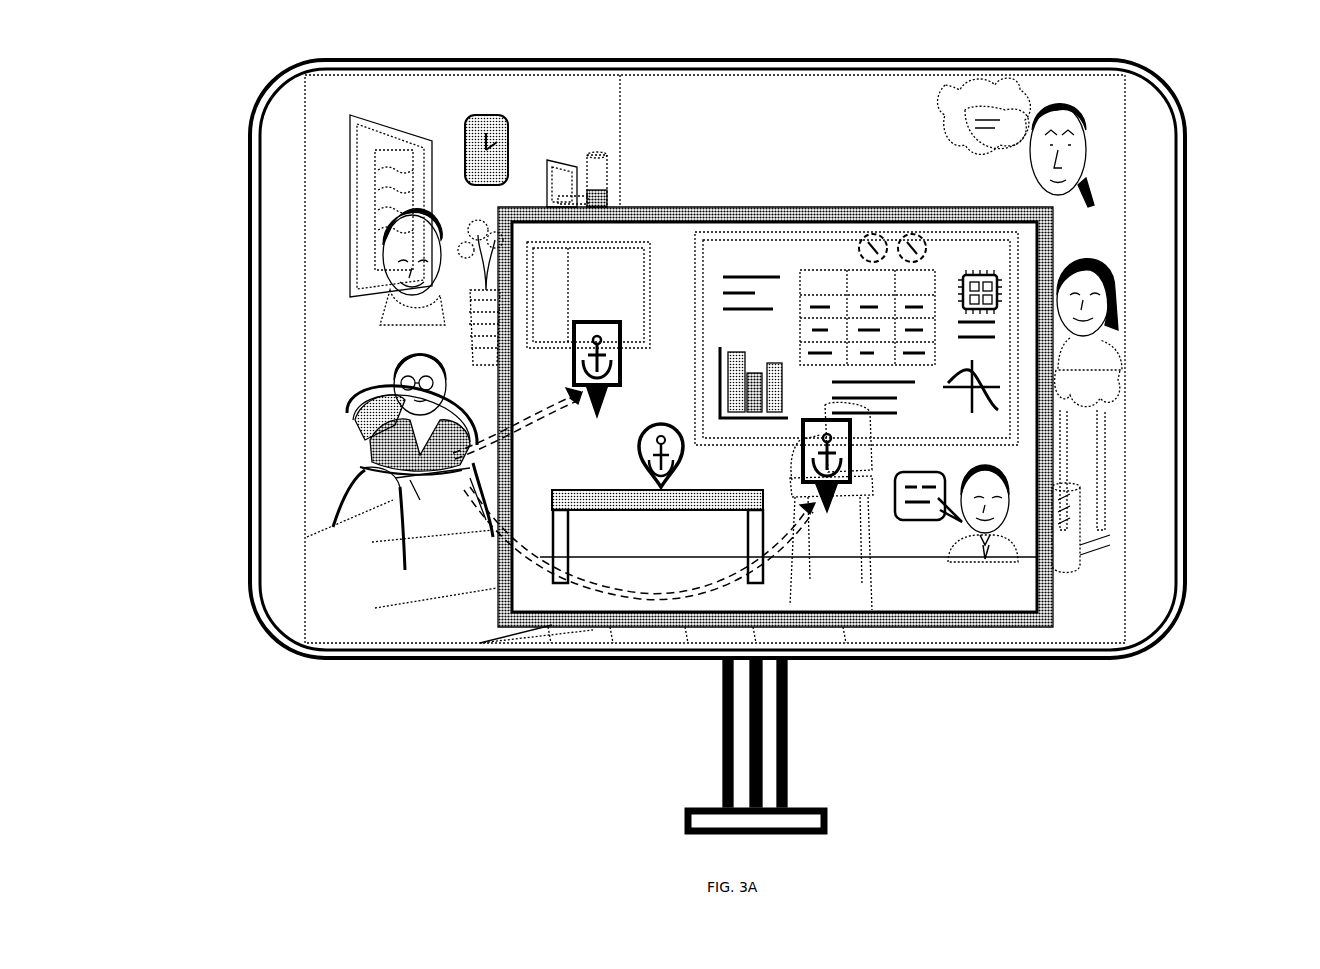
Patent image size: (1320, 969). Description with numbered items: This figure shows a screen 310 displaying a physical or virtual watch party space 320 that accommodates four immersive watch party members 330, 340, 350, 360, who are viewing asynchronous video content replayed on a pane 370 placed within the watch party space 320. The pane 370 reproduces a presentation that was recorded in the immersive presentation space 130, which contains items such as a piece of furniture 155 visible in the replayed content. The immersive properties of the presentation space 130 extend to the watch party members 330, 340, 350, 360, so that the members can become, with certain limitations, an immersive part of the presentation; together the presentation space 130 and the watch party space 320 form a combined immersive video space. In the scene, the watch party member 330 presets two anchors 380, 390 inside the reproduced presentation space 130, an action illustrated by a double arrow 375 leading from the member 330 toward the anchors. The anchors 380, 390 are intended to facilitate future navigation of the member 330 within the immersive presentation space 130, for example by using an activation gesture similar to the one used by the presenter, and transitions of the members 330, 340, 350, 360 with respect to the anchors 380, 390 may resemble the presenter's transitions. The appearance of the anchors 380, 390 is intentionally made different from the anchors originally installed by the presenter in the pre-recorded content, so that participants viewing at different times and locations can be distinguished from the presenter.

The screen 310 is at (250, 118).
The watch party space 320 is at (713, 121).
The watch party member 330 is at (390, 372).
The watch party member 340 is at (373, 228).
The watch party member 350 is at (1090, 163).
The watch party member 360 is at (1127, 357).
The pane 370 is at (803, 207).
The anchor 380 is at (823, 418).
The anchor 390 is at (603, 320).
The immersive presentation space 130 is at (672, 396).
The piece of furniture 155 is at (862, 527).
The double arrow 375 is at (605, 648).